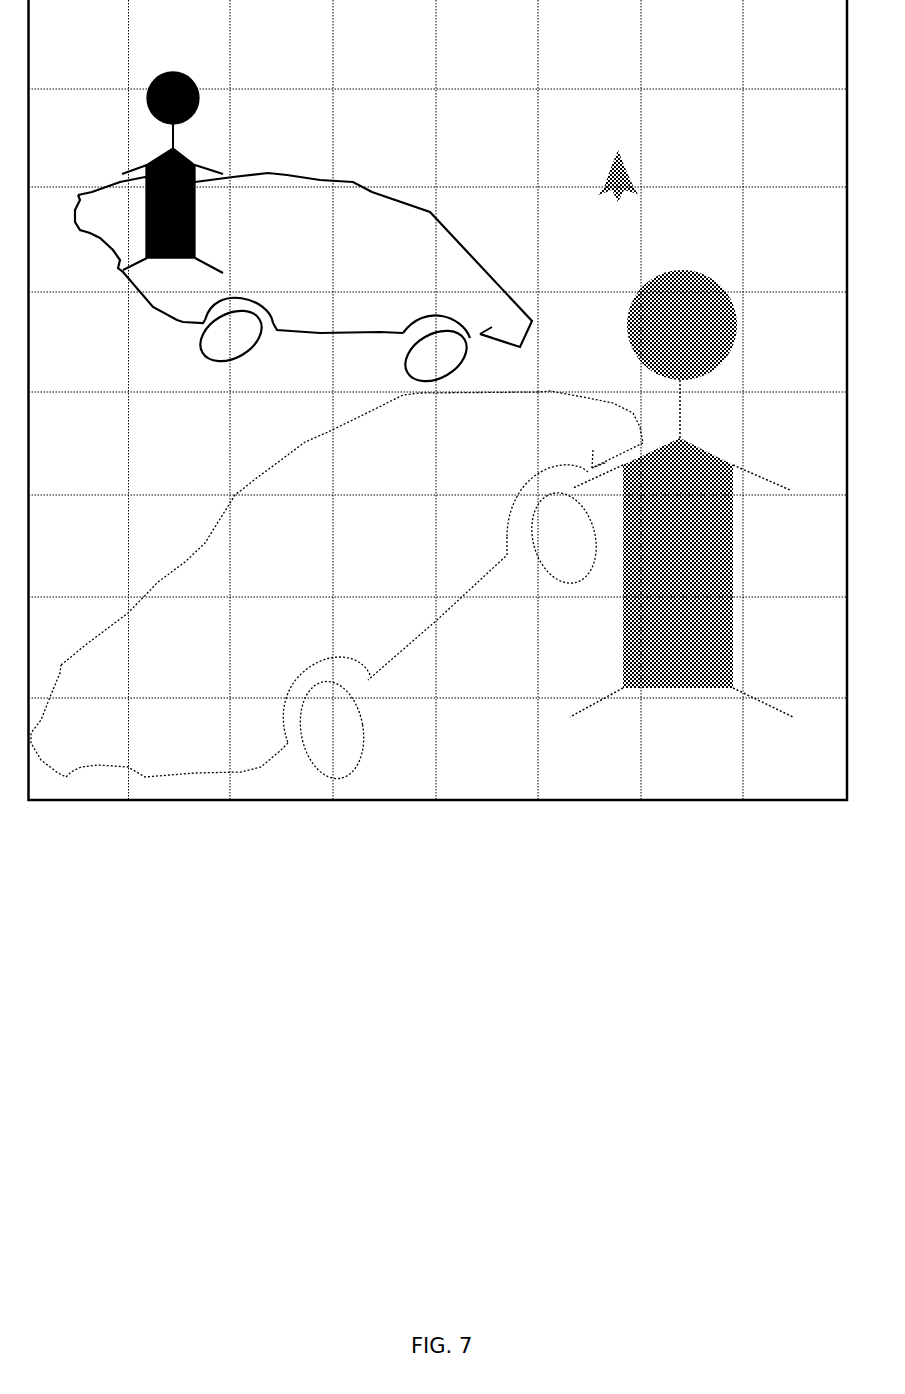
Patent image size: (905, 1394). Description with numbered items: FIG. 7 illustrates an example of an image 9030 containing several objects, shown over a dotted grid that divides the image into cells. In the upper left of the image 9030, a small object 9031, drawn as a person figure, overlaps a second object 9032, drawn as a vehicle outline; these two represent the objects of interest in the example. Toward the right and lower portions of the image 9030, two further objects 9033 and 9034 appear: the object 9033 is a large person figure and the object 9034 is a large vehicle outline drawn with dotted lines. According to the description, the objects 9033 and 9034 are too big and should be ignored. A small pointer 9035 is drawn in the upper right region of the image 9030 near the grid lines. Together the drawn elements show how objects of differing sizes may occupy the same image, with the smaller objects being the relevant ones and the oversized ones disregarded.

The display screen / image with grid 9030 is at (447, 898).
The object 9031 is at (196, 226).
The object 9032 is at (375, 194).
The object 9033 is at (701, 560).
The object 9034 is at (160, 582).
The pointer / cursor arrow 9035 is at (608, 172).